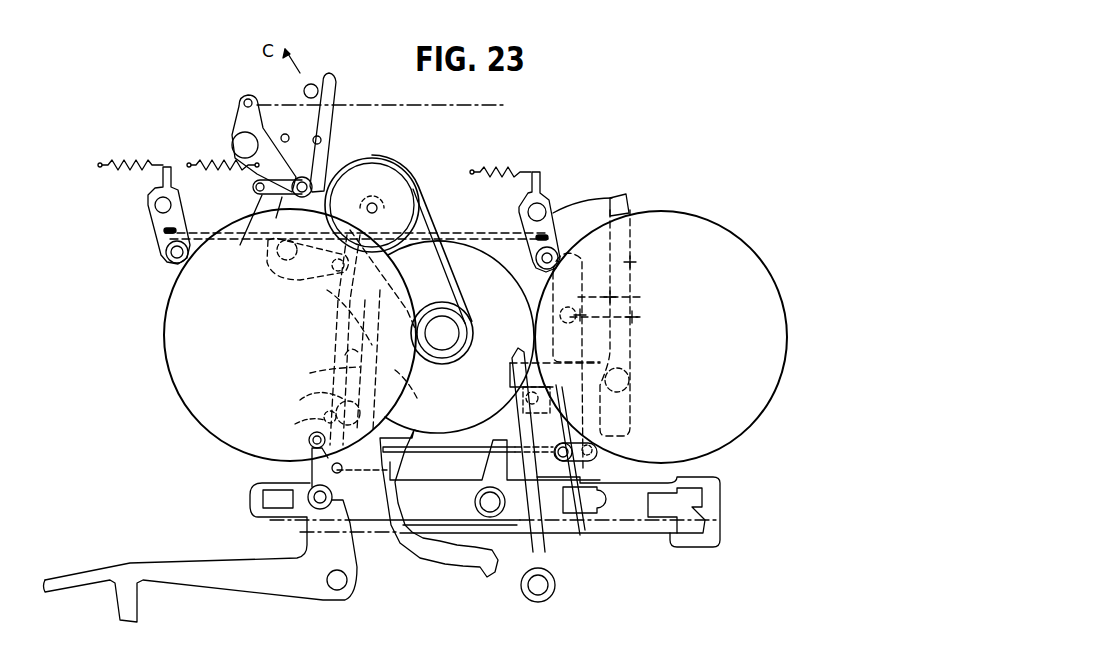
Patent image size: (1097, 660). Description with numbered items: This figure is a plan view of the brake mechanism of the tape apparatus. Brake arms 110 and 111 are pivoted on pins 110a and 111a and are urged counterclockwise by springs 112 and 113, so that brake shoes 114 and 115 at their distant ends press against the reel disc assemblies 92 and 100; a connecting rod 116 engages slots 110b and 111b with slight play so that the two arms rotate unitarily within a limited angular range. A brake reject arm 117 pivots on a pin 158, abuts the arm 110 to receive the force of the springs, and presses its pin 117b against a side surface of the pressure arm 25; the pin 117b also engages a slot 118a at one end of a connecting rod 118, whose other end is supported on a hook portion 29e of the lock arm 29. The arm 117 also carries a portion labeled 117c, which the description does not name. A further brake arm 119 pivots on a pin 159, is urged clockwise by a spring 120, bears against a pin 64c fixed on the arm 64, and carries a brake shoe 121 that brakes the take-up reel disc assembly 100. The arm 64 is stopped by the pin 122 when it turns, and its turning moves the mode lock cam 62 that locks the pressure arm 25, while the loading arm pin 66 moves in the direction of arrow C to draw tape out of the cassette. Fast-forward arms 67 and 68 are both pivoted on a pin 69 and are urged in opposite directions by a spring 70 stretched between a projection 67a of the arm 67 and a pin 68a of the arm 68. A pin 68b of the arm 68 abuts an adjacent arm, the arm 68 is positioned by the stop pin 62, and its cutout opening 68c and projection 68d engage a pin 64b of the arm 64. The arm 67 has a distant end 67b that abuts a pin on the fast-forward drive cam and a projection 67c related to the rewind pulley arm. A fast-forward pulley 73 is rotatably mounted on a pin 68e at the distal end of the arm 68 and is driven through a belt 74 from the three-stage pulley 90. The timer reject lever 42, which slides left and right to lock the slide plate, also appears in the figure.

The pressure arm 25 is at (546, 552).
The lock arm 29 is at (243, 592).
The hook portion 29e is at (308, 440).
The timer reject lever 42 is at (708, 548).
The stop pin (mode lock cam) 62 is at (631, 262).
The arm 64 is at (336, 88).
The pin 64b is at (333, 270).
The pin 64c is at (281, 259).
The loading arm pin 66 is at (313, 84).
The fast-forward arm 67 is at (417, 567).
The projection 67a is at (314, 403).
The distant end 67b is at (488, 578).
The projection 67c is at (416, 428).
The fast-forward arm 68 is at (338, 334).
The pin 68a is at (406, 374).
The pin 68b is at (307, 470).
The cutout opening 68c is at (335, 317).
The projection 68d is at (366, 196).
The pin 68e is at (380, 206).
The pin 69 is at (299, 416).
The spring 70 is at (325, 361).
The fast-forward pulley 73 is at (380, 170).
The belt 74 is at (426, 216).
The three-stage pulley 90 is at (440, 309).
The reel disc assembly 92 is at (775, 291).
The take-up reel disc assembly 100 is at (168, 360).
The brake arm 110 is at (557, 216).
The pin 110a is at (546, 205).
The slot 110b is at (628, 207).
The brake arm 111 is at (148, 220).
The pin 111a is at (157, 204).
The slot 111b is at (165, 232).
The spring 112 is at (506, 170).
The spring 113 is at (130, 163).
The brake shoe 114 is at (546, 262).
The brake shoe 115 is at (168, 260).
The connecting rod 116 is at (477, 232).
The brake reject arm 117 is at (591, 340).
The pin 117b is at (510, 400).
The lever arm 117c is at (580, 538).
The connecting rod 118 is at (432, 455).
The slot 118a is at (612, 456).
The brake arm 119 is at (240, 108).
The spring 120 is at (222, 182).
The brake shoe 121 is at (314, 171).
The pin 122 is at (283, 135).
The pin 158 is at (616, 318).
The pin 159 is at (232, 145).